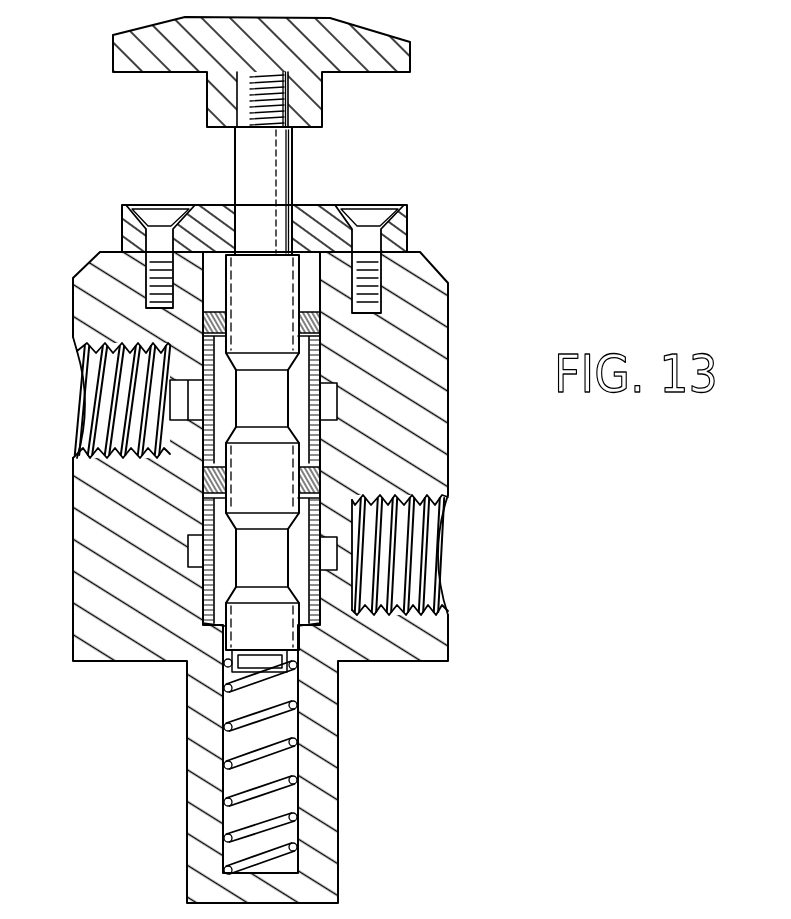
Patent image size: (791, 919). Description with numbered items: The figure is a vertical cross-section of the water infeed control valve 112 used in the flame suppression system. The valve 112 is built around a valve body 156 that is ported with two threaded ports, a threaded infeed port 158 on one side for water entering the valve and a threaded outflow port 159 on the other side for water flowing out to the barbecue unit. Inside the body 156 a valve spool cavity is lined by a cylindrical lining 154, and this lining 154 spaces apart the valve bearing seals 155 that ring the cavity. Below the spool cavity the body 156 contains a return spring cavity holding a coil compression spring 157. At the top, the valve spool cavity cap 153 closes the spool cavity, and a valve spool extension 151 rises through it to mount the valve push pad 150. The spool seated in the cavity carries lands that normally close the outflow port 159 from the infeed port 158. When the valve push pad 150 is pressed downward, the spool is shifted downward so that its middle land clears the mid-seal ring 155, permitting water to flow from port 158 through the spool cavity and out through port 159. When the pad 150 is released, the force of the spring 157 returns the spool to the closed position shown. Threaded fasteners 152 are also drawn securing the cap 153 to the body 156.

The water infeed control valve 112 is at (521, 300).
The valve push pad 150 is at (400, 33).
The valve spool extension 151 is at (293, 163).
The screw 152 is at (407, 230).
The valve spool cavity cap 153 is at (122, 215).
The cylindrical lining 154 is at (314, 445).
The valve bearing seals 155 is at (322, 321).
The valve body 156 is at (74, 658).
The coil compression spring 157 is at (293, 780).
The threaded infeed port 158 is at (80, 395).
The threaded outflow port 159 is at (443, 560).